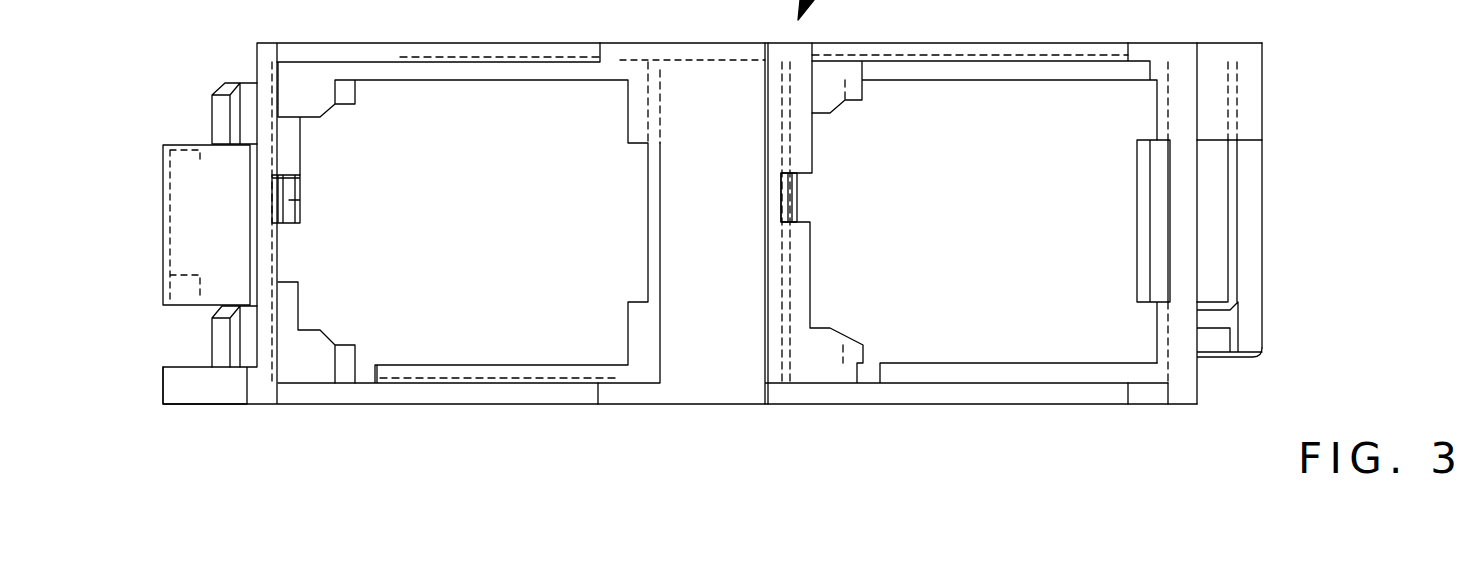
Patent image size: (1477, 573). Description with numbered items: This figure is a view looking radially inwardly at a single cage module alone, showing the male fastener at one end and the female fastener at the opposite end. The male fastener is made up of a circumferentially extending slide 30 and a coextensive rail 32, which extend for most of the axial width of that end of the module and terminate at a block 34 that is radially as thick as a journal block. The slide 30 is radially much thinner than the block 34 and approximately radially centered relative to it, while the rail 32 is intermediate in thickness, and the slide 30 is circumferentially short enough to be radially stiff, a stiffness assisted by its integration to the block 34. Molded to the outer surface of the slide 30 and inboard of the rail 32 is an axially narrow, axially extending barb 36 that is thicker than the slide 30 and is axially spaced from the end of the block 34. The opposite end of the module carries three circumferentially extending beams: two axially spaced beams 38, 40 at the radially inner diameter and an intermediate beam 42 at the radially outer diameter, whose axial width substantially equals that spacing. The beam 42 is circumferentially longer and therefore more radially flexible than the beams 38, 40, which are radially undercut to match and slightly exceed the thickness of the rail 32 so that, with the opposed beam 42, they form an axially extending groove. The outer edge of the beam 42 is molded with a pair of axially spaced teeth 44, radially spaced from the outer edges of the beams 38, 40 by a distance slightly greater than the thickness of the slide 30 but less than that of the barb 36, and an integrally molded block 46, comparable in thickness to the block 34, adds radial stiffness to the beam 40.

The slide 30 is at (1213, 173).
The rail 32 is at (1253, 220).
The block 34 is at (1213, 112).
The barb 36 is at (1218, 303).
The beam 38 is at (212, 110).
The beam 40 is at (222, 345).
The intermediate beam 42 is at (188, 217).
The teeth 44 is at (163, 292).
The block 46 is at (210, 397).